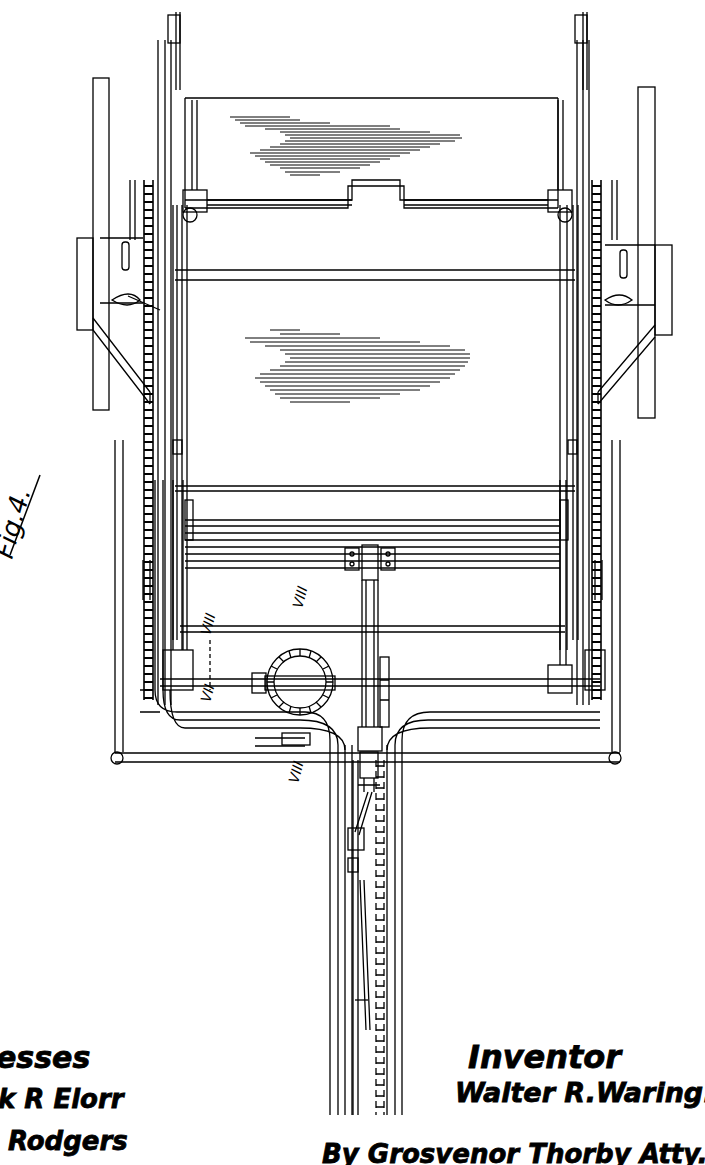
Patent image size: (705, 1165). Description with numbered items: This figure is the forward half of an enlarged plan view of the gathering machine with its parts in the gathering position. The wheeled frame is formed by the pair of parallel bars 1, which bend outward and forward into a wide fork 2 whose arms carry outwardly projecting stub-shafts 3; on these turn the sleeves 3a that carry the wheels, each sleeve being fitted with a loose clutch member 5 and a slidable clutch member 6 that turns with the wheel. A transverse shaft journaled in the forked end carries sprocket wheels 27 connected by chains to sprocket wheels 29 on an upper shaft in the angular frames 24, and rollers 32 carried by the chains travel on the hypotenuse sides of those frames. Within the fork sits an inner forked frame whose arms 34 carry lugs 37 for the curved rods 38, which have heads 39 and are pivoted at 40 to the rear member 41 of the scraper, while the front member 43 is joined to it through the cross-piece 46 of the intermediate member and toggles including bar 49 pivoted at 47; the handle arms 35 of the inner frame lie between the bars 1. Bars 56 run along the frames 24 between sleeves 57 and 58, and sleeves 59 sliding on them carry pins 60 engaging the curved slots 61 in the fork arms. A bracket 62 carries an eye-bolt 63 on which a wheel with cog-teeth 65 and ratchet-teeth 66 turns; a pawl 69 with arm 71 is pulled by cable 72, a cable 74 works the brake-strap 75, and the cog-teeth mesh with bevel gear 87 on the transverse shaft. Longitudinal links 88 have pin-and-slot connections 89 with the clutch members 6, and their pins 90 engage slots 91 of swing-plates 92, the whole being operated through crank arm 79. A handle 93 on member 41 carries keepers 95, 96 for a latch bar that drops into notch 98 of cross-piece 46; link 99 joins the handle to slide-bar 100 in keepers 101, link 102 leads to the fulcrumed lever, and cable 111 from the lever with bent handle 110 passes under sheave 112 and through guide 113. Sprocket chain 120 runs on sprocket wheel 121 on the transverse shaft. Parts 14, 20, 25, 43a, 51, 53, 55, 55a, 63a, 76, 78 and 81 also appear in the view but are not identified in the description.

The parallel bars 1 is at (100, 398).
The wide fork 2 is at (210, 762).
The stub-shafts 3 is at (77, 248).
The sleeves 3a is at (140, 228).
The loose clutch members 5 is at (132, 232).
The slidable clutch members 6 is at (135, 245).
The guide rail 14 is at (166, 195).
The plate 20 is at (313, 205).
The angular frames 24 is at (200, 192).
The brace 25 is at (110, 355).
The sprocket wheels 27 is at (140, 700).
The sprocket wheels 29 is at (150, 200).
The rollers 32 is at (155, 660).
The arms 34 is at (178, 395).
The arms 35 is at (336, 935).
The recessed lugs 37 is at (560, 525).
The curved rods 38 is at (568, 470).
The heads 39 is at (182, 447).
The pivot 40 is at (187, 465).
The rear member 41 is at (410, 400).
The front member 43 is at (378, 98).
The plate edge 43a is at (550, 270).
The cross-piece 46 is at (300, 486).
The pivot 47 is at (372, 544).
The toggle bar 49 is at (228, 198).
The upright 51 is at (195, 185).
The cap 53 is at (176, 32).
The rod 55 is at (182, 45).
The rod end 55a is at (445, 628).
The bars 56 is at (188, 310).
The sleeves 57 is at (556, 200).
The sleeves 58 is at (183, 768).
The sleeves 59 is at (555, 680).
The pins 60 is at (636, 242).
The slots 61 is at (193, 520).
The bracket 62 is at (186, 650).
The eye-bolt 63 is at (300, 657).
The cross bar 63a is at (172, 285).
The beveled cog-teeth 65 is at (290, 747).
The ratchet-teeth 66 is at (292, 668).
The pawl 69 is at (322, 676).
The arm 71 is at (305, 740).
The cable 72 is at (330, 725).
The cable 74 is at (362, 735).
The brake-strap 75 is at (255, 744).
The rod 76 is at (475, 686).
The guide 78 is at (142, 565).
The crank arm 79 is at (336, 668).
The nut 81 is at (260, 673).
The bevel gear 87 is at (148, 302).
The longitudinal links 88 is at (118, 505).
The pin-and-slot connections 89 is at (122, 258).
The pins 90 is at (122, 322).
The slots 91 is at (671, 352).
The swing-plates 92 is at (632, 300).
The handle 93 is at (377, 545).
The keeper 95 is at (382, 570).
The keeper 96 is at (385, 760).
The notch 98 is at (364, 545).
The link 99 is at (366, 897).
The slide-bar 100 is at (341, 1065).
The keepers 101 is at (346, 865).
The link 102 is at (356, 1045).
The bent handle 110 is at (385, 840).
The cable 111 is at (365, 993).
The guide sheave 112 is at (382, 850).
The guide 113 is at (385, 805).
The sprocket chain 120 is at (380, 1088).
The sprocket wheel 121 is at (389, 672).